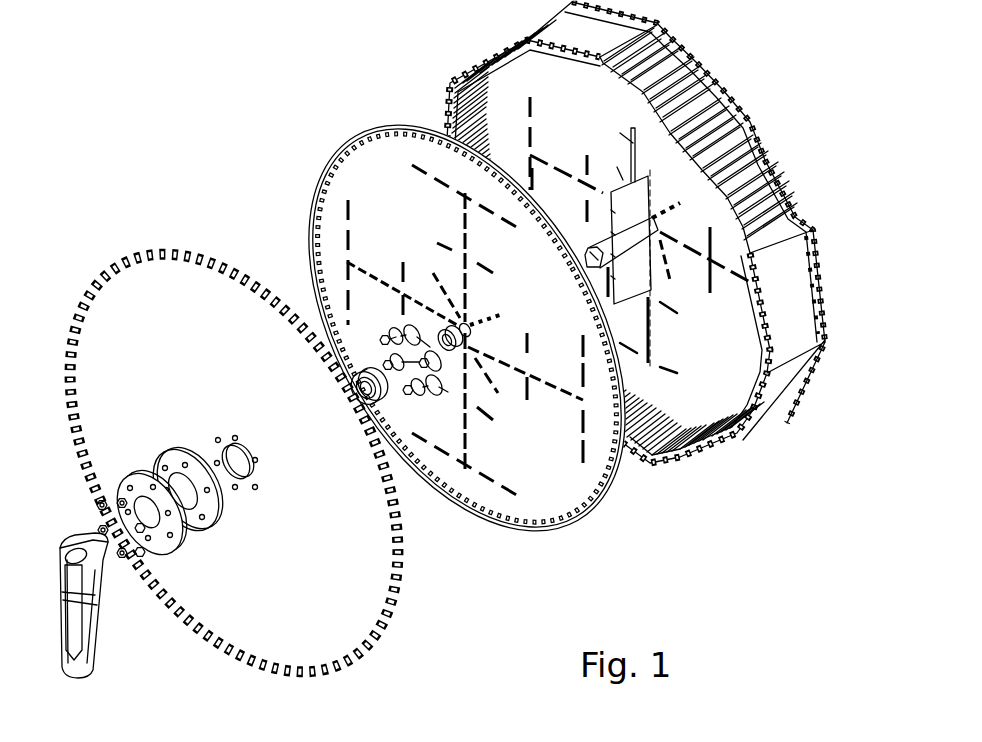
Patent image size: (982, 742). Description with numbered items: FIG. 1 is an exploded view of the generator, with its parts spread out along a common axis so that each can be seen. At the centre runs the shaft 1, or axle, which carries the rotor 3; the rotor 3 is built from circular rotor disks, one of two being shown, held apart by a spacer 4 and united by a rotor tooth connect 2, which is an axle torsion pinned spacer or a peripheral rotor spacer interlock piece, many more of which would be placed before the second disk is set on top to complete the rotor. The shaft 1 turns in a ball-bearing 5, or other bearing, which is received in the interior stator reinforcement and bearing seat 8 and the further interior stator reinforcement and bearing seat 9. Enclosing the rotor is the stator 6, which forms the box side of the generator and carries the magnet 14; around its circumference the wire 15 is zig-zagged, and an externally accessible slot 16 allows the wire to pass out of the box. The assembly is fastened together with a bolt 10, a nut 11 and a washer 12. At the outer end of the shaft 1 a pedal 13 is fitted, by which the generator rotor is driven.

The shaft 1 is at (623, 242).
The rotor tooth connect 2 is at (632, 207).
The rotor 3 is at (547, 470).
The spacer 4 is at (443, 330).
The ball-bearing 5 is at (378, 407).
The stator 6 is at (342, 617).
The interior stator reinforcement and bearing seat 8 is at (207, 508).
The interior stator reinforcement and bearing seat 9 is at (160, 542).
The bolt 10 is at (413, 393).
The nut 11 is at (100, 528).
The washer 12 is at (120, 502).
The pedal 13 is at (77, 613).
The magnet 14 is at (773, 163).
The wire zig zagged around the circumference 15 is at (733, 97).
The externally accessible slot for wire 16 is at (630, 148).